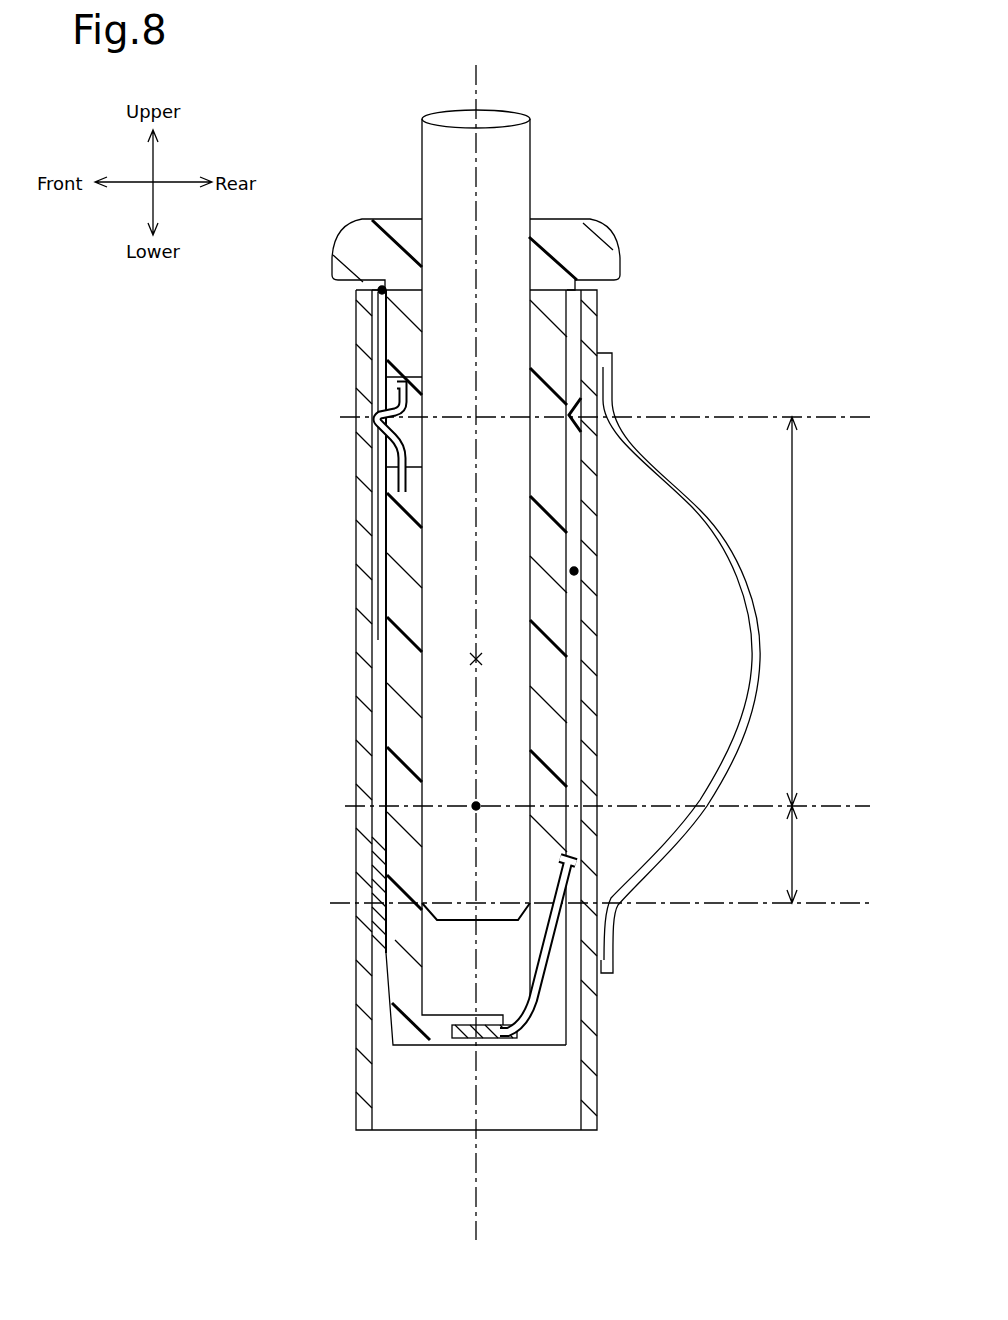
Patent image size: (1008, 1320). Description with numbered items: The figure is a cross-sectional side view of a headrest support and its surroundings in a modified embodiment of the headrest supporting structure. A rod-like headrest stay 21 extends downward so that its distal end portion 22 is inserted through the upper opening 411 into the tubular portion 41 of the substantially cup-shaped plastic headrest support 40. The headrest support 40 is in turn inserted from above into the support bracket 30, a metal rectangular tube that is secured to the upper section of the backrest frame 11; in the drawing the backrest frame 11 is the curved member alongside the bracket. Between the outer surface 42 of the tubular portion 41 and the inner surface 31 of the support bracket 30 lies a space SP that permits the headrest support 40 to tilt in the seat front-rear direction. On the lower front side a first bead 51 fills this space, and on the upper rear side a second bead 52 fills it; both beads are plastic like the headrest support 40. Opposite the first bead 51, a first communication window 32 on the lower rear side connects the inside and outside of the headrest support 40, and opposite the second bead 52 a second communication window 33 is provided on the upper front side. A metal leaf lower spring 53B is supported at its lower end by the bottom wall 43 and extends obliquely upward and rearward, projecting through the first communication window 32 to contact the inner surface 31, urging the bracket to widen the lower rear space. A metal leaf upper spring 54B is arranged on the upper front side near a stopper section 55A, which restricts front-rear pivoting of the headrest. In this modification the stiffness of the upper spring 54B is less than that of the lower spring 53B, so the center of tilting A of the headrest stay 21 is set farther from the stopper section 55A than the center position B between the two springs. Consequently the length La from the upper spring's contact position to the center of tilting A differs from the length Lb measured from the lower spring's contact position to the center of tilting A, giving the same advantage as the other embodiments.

The backrest frame 11 is at (700, 492).
The headrest stay 21 is at (437, 730).
The distal end portion 22 is at (437, 820).
The support bracket 30 is at (362, 482).
The inner surface 31 is at (378, 547).
The first communication window 32 is at (565, 813).
The second communication window 33 is at (386, 380).
The headrest support 40 is at (464, 620).
The tubular portion 41 is at (392, 608).
The upper opening 411 is at (422, 212).
The outer surface 42 is at (380, 647).
The bottom wall 43 is at (452, 1045).
The first bead 51 is at (375, 878).
The second bead 52 is at (600, 410).
The lower spring 53B is at (572, 1023).
The upper spring 54B is at (388, 407).
The stopper section 55A is at (382, 290).
The space SP is at (574, 571).
The center of tilting A is at (476, 806).
The center position B is at (480, 661).
The length La is at (807, 611).
The length Lb is at (807, 854).